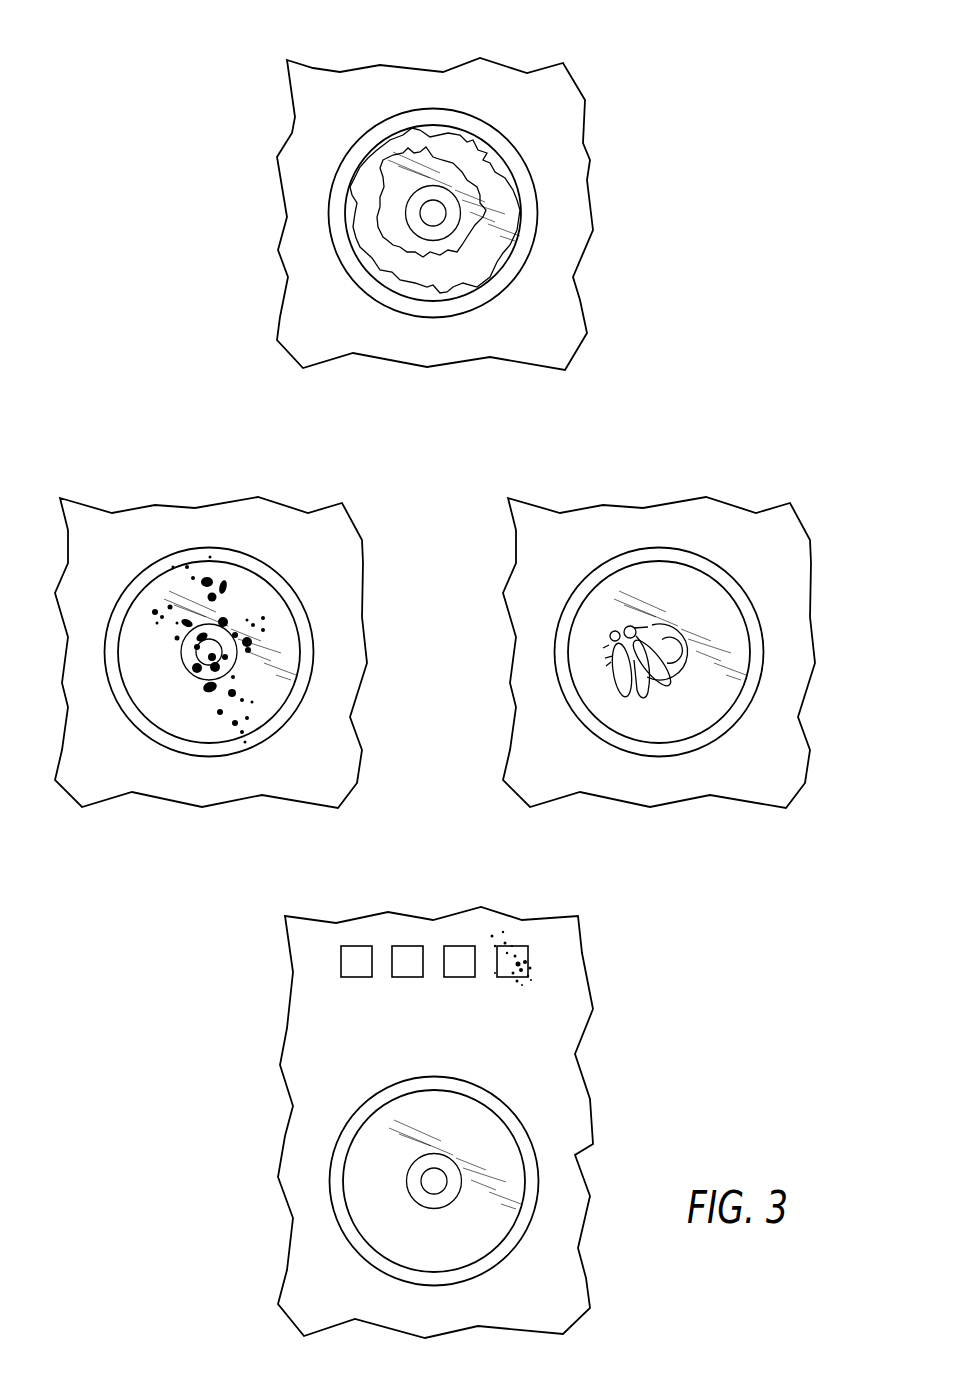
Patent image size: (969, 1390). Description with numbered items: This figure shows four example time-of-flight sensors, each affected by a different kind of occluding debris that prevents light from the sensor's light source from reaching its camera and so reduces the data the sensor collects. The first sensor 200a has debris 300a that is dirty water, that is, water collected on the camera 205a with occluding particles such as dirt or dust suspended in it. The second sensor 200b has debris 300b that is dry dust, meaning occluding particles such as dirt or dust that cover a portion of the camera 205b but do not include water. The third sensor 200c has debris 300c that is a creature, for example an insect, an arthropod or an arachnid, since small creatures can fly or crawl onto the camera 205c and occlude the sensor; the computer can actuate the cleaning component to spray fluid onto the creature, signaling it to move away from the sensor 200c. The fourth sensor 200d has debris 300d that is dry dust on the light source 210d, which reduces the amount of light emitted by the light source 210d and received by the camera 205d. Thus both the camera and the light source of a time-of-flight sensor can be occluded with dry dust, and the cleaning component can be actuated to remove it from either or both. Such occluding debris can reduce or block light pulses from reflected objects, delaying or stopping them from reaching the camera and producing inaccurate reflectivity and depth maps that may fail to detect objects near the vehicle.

The time-of-flight sensor 200a is at (692, 18).
The camera 205a is at (528, 167).
The occluding debris 300a is at (375, 173).
The time-of-flight sensor 200b is at (393, 448).
The camera 205b is at (303, 607).
The occluding debris 300b is at (210, 578).
The time-of-flight sensor 200c is at (843, 448).
The camera 205c is at (753, 607).
The occluding debris 300c is at (617, 627).
The time-of-flight sensor 200d is at (690, 894).
The camera 205d is at (525, 1130).
The light source 210d is at (356, 977).
The occluding debris 300d is at (522, 948).